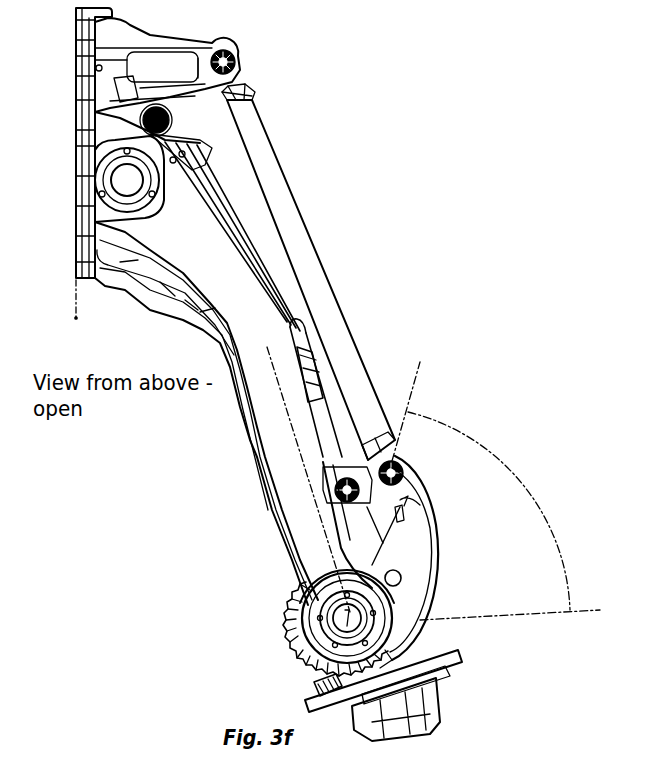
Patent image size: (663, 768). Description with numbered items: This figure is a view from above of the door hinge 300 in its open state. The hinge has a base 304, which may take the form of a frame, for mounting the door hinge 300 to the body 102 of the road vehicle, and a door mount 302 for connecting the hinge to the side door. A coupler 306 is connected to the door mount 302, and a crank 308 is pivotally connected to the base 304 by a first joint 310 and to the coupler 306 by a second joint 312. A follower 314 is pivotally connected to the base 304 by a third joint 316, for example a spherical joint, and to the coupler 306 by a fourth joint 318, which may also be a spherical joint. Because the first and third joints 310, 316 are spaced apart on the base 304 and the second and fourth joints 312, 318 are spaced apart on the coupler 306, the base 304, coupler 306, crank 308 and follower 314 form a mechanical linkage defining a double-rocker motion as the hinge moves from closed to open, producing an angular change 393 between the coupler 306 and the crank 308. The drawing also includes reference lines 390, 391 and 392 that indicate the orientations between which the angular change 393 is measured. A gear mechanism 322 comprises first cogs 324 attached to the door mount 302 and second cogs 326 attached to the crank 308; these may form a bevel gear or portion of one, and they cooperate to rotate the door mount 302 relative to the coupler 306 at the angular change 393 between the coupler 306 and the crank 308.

The body 102 is at (76, 307).
The door hinge 300 is at (441, 265).
The door mount 302 is at (456, 668).
The base 304 is at (76, 210).
The coupler 306 is at (438, 522).
The crank 308 is at (262, 485).
The first joint 310 is at (100, 158).
The second joint 312 is at (294, 618).
The follower 314 is at (323, 268).
The third joint 316 is at (236, 58).
The fourth joint 318 is at (402, 462).
The gear mechanism 322 is at (289, 671).
The first cogs 324 is at (310, 686).
The second cogs 326 is at (298, 645).
The arm axis 390 is at (268, 343).
The reference line 391 is at (586, 608).
The strut axis line 392 is at (420, 370).
The angular change 393 is at (508, 466).